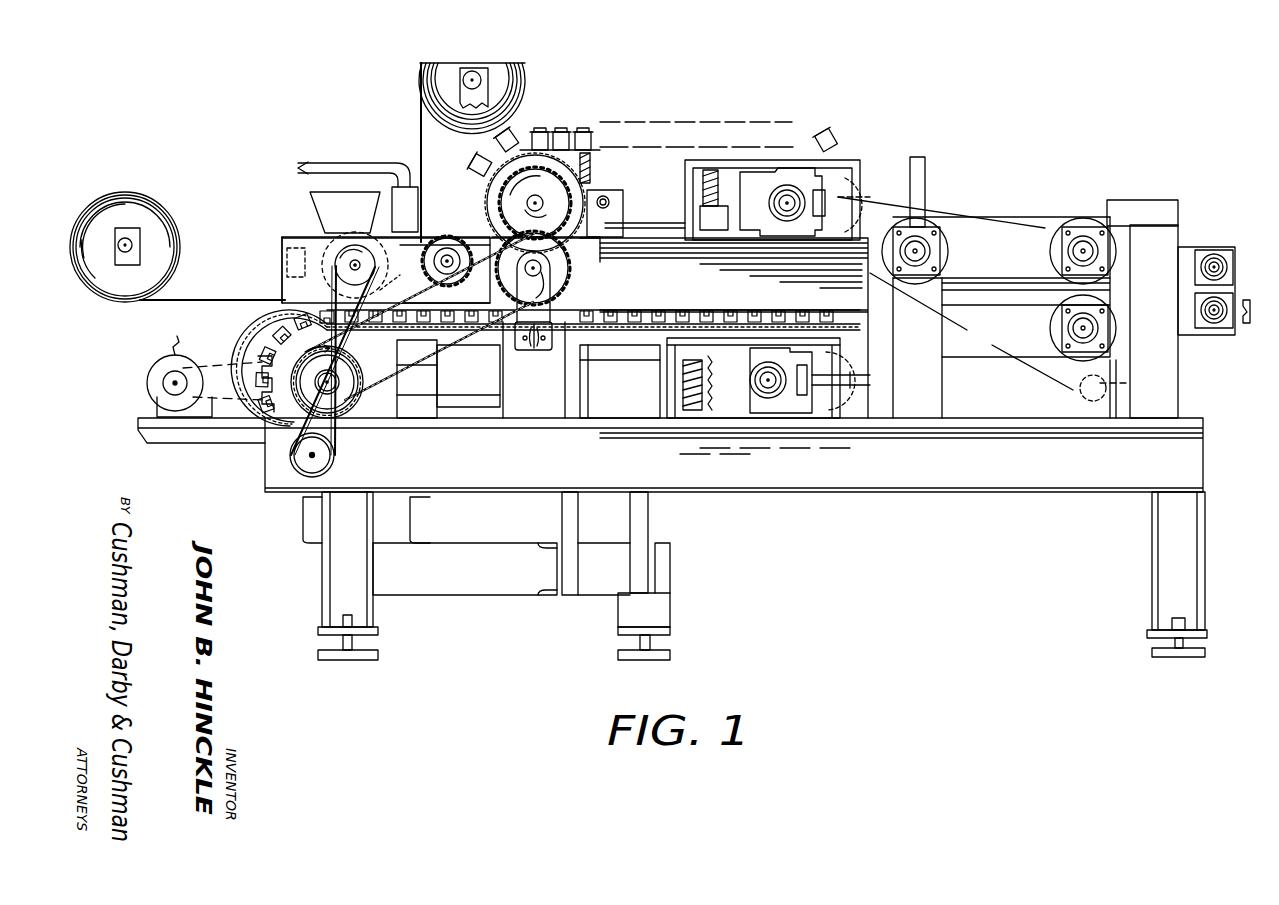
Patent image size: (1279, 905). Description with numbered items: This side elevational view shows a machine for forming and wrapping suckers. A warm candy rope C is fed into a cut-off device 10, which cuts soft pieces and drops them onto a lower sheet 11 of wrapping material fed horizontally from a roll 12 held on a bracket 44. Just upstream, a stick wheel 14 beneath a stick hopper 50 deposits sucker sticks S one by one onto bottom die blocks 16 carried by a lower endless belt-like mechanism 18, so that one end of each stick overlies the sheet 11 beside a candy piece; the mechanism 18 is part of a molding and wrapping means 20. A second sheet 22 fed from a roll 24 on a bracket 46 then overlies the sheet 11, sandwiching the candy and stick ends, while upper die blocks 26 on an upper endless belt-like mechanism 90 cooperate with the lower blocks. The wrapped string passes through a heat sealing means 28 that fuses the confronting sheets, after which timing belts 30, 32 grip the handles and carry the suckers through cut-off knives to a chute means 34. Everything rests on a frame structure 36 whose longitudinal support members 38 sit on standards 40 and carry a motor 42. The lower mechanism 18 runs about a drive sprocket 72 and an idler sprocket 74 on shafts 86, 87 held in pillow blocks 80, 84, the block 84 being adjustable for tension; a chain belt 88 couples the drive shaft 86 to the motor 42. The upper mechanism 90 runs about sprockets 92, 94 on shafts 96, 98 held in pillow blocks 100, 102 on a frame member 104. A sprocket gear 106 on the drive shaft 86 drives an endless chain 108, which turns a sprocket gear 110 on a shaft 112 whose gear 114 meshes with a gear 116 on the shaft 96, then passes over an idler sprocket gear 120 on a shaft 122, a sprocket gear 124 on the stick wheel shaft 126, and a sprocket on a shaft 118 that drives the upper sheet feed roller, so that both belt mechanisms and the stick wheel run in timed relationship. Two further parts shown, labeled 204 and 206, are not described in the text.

The cut-off device 10 is at (411, 166).
The sheet or tape of wrapping material 11 is at (206, 300).
The roll of wrapping material 12 is at (170, 215).
The stick wheel 14 is at (306, 231).
The bottom die blocks 16 is at (268, 350).
The lower endless belt-like mechanism 18 is at (274, 392).
The molding and wrapping means 20 is at (680, 103).
The second sheet or tape of wrapping material 22 is at (428, 168).
The roll of wrapping material 24 is at (523, 93).
The upper die blocks 26 is at (538, 126).
The heat sealing means 28 is at (1019, 188).
The timing belt 30 is at (1192, 246).
The timing belt 32 is at (1190, 338).
The conveyor or chute means 34 is at (1246, 325).
The frame structure 36 is at (998, 507).
The longitudinal support members 38 is at (792, 494).
The standards 40 is at (375, 570).
The source of power 42 is at (148, 378).
The bracket 44 is at (140, 256).
The bracket 46 is at (455, 82).
The stick hopper 50 is at (315, 200).
The sprocket 72 is at (422, 316).
The idler sprocket 74 is at (712, 400).
The bearing pillow block 80 is at (408, 428).
The bearing pillow block 84 is at (762, 405).
The drive shaft 86 is at (355, 408).
The shaft 87 is at (778, 396).
The endless chain belt 88 is at (212, 365).
The upper endless belt-like mechanism 90 is at (592, 165).
The sprocket 92 is at (598, 198).
The sprocket 94 is at (738, 168).
The shaft 96 is at (535, 203).
The shaft 98 is at (800, 202).
The pillow block 100 is at (578, 246).
The pillow block 102 is at (818, 163).
The frame member 104 is at (575, 320).
The sprocket gear 106 is at (316, 402).
The endless chain 108 is at (460, 346).
The sprocket gear 110 is at (564, 266).
The shaft 112 is at (570, 278).
The gear 114 is at (445, 274).
The gear 116 is at (606, 140).
The shaft 118 is at (447, 250).
The idler sprocket gear 120 is at (430, 266).
The shaft 122 is at (308, 462).
The sprocket gear 124 is at (386, 270).
The shaft 126 is at (357, 258).
The bearing block 204 is at (662, 200).
The adjusting screw 206 is at (684, 178).
The rope C is at (322, 162).
The sucker sticks S is at (392, 289).